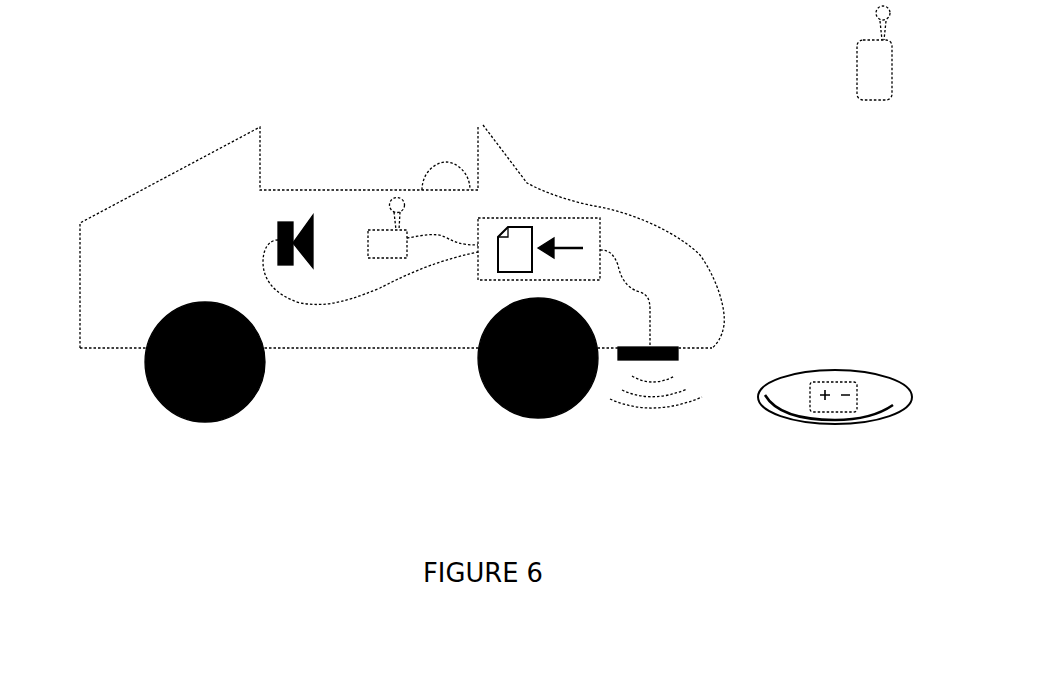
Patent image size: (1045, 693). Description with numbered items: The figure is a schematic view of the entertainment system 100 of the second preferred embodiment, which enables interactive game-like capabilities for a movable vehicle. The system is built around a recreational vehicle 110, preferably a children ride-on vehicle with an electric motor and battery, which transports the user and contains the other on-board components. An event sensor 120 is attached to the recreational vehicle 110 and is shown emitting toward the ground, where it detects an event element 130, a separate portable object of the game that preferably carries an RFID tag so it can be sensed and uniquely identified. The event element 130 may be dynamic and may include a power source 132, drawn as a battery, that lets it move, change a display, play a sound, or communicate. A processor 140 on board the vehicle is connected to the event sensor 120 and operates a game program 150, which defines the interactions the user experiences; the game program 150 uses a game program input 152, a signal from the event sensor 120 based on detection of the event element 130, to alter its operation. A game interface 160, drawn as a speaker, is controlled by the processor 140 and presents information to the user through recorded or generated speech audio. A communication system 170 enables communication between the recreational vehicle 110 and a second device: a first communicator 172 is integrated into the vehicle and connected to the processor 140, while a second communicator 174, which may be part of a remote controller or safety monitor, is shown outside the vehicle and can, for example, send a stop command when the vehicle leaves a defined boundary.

The entertainment system 100 is at (142, 137).
The recreational vehicle 110 is at (369, 350).
The event sensor 120 is at (652, 347).
The event element 130 is at (838, 380).
The power source 132 is at (805, 367).
The processor 140 is at (494, 218).
The game program 150 is at (518, 233).
The game program input 152 is at (572, 235).
The game interface 160 is at (292, 210).
The communication system 170 is at (393, 262).
The first communicator 172 is at (405, 240).
The second communicator 174 is at (843, 70).